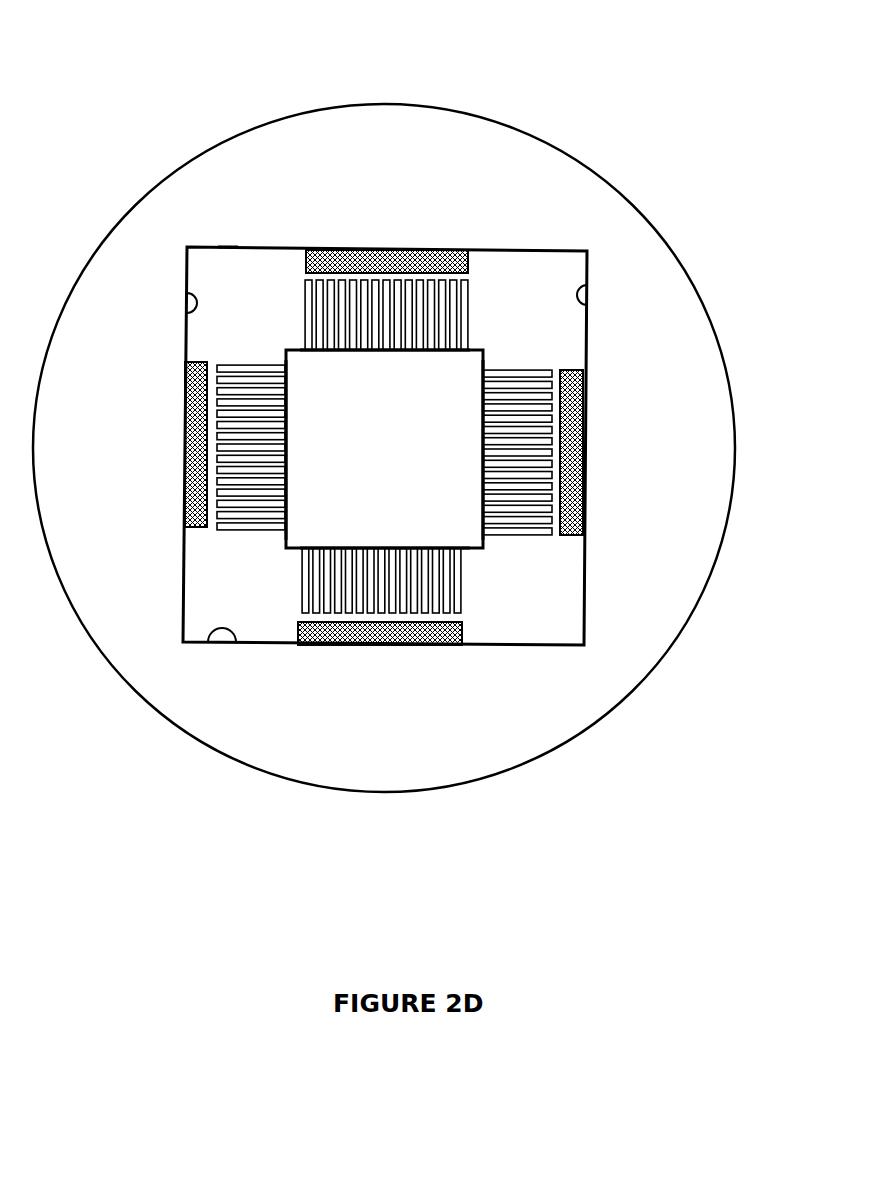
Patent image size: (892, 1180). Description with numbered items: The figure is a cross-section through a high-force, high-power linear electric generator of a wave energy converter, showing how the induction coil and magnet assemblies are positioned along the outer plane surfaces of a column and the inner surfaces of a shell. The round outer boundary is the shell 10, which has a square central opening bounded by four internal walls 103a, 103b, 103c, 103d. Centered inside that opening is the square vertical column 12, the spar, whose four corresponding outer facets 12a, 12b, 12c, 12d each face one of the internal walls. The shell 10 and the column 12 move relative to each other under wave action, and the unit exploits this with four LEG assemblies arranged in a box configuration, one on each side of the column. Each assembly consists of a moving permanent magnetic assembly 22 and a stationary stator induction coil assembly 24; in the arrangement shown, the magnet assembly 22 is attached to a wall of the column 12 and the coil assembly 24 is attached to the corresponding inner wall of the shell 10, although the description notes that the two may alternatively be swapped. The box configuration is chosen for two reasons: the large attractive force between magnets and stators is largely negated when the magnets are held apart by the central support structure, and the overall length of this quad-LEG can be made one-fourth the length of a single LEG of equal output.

The shell 10 is at (433, 106).
The column 12 is at (346, 522).
The outer facet 12a is at (375, 548).
The outer facet 12b is at (287, 470).
The outer facet 12c is at (385, 352).
The outer facet 12d is at (483, 460).
The permanent magnetic assembly 22 is at (360, 250).
The induction coil assembly 24 is at (470, 312).
The internal wall 103a is at (200, 642).
The internal wall 103b is at (187, 317).
The internal wall 103c is at (228, 247).
The internal wall 103d is at (587, 283).